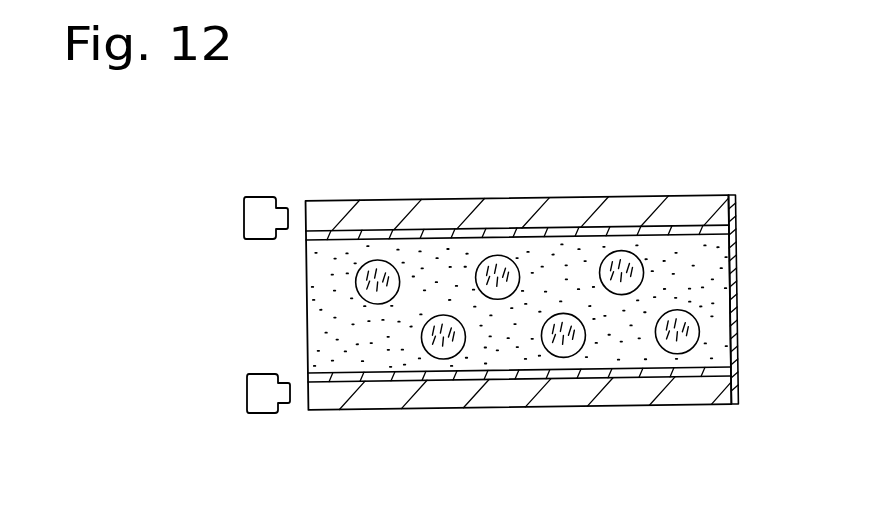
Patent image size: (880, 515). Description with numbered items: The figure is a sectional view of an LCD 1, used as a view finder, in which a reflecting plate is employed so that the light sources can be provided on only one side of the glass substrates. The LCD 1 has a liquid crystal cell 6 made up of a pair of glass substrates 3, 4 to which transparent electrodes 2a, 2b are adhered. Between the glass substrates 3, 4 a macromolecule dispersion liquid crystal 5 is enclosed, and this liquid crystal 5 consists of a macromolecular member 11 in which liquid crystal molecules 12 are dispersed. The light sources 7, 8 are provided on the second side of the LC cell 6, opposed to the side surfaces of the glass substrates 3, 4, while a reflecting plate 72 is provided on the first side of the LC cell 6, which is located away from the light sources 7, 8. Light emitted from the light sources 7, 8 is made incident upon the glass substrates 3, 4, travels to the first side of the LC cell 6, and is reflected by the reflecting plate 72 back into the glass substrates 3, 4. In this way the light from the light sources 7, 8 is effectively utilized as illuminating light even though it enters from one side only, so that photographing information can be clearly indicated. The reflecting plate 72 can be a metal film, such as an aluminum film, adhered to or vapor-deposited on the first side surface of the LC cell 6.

The LCD 1 is at (612, 187).
The transparent electrode 2a is at (304, 239).
The transparent electrode 2b is at (305, 375).
The glass substrate 3 is at (398, 213).
The glass substrate 4 is at (380, 410).
The macromolecule dispersion liquid crystal 5 is at (307, 297).
The liquid crystal cell 6 is at (689, 197).
The light source 7 is at (258, 197).
The light source 8 is at (266, 413).
The macromolecular member 11 is at (504, 348).
The liquid crystal molecules 12 is at (575, 356).
The reflecting plate 72 is at (740, 212).